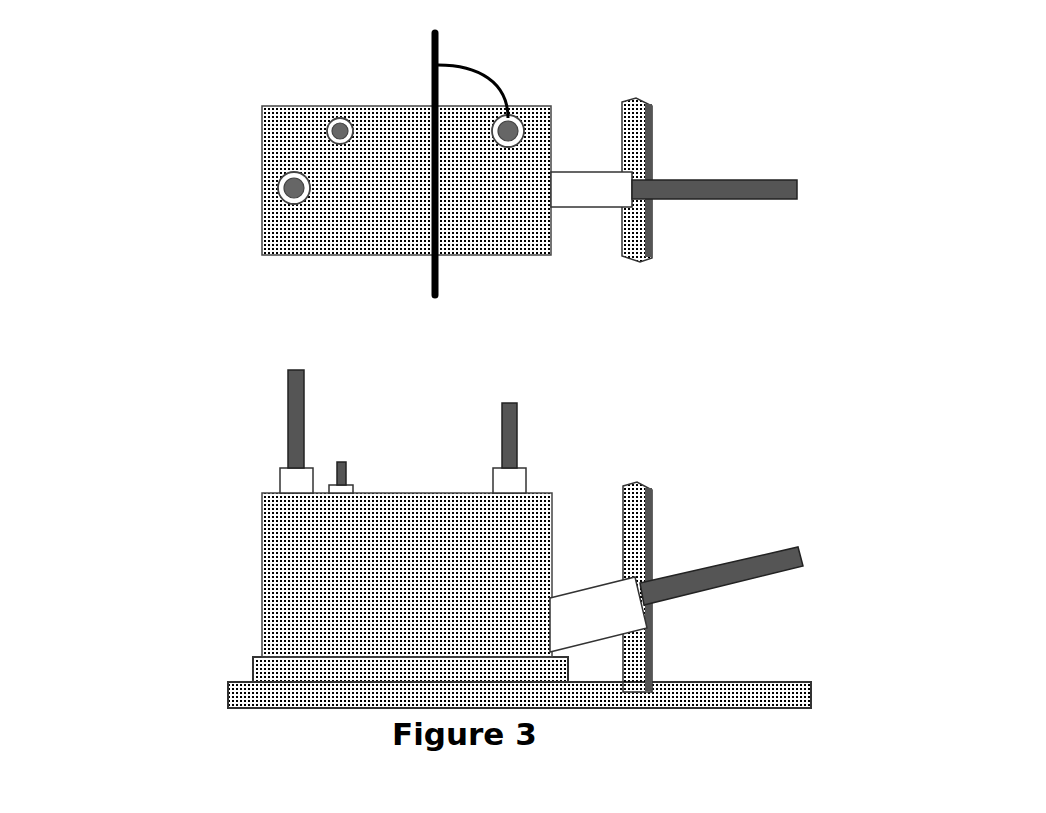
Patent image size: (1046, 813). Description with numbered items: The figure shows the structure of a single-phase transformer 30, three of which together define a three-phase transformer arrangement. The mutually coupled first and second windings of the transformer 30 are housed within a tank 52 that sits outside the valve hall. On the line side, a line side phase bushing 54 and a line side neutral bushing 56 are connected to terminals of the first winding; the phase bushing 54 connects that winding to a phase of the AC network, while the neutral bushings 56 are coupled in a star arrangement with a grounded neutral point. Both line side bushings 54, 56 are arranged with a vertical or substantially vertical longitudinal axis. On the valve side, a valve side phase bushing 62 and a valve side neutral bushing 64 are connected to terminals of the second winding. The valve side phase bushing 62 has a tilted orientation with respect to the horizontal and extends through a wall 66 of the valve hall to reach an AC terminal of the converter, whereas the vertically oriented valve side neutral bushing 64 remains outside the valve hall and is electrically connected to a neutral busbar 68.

The single-phase transformer 30 is at (459, 370).
The tank 52 is at (288, 152).
The line side phase bushing 54 is at (295, 208).
The line side neutral bushing 56 is at (342, 147).
The valve side phase bushing 62 is at (739, 560).
The valve side neutral bushing 64 is at (508, 152).
The wall 66 is at (637, 500).
The neutral busbar 68 is at (437, 305).